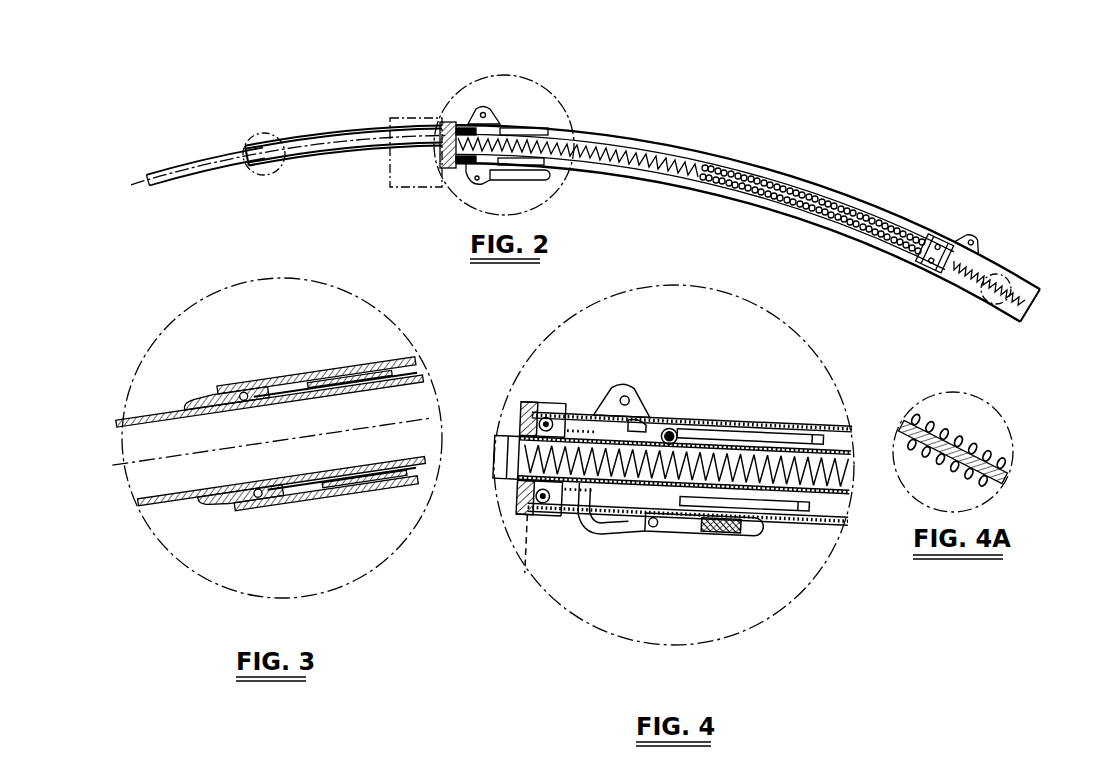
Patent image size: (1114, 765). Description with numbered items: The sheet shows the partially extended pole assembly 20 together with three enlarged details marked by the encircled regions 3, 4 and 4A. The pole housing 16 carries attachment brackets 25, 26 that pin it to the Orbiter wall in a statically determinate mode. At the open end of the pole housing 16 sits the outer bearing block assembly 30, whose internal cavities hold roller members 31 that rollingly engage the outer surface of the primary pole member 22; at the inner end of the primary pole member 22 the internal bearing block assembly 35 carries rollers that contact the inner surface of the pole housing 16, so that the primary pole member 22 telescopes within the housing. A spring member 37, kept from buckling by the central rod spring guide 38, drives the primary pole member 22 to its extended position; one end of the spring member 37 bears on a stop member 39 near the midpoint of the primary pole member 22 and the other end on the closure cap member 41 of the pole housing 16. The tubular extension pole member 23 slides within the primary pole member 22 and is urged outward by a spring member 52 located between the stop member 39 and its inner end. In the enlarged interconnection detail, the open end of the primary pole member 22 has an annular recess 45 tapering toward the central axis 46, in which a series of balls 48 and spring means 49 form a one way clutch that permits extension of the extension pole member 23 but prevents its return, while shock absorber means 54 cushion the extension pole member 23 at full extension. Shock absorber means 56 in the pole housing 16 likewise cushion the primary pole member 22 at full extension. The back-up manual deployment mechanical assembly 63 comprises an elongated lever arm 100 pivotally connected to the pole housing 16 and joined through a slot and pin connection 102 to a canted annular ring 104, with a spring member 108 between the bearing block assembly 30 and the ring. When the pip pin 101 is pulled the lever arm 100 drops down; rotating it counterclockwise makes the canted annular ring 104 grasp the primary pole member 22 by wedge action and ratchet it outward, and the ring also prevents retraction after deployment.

In FIG. 2, the detail circle for FIG. 3 is at (249, 133).
In FIG. 2, the detail circle for FIG. 4 is at (568, 186).
In FIG. 2, the detail circle for FIG. 4A is at (984, 306).
In FIG. 4, the pole housing 16 is at (733, 425).
In FIG. 2, the pole assembly 20 is at (823, 184).
In FIG. 2, the primary pole member 22 is at (312, 132).
In FIG. 3, the primary pole member 22 is at (313, 375).
In FIG. 4, the primary pole member 22 is at (628, 445).
In FIG. 2, the extension pole member 23 is at (188, 158).
In FIG. 3, the extension pole member 23 is at (157, 415).
In FIG. 2, the attachment bracket 25 is at (966, 236).
In FIG. 2, the attachment bracket 26 is at (482, 110).
In FIG. 4, the attachment bracket 26 is at (632, 393).
In FIG. 2, the outer bearing block assembly 30 is at (451, 119).
In FIG. 4, the outer bearing block assembly 30 is at (536, 413).
In FIG. 4, the roller member 31 is at (548, 421).
In FIG. 2, the internal bearing block assembly 35 is at (920, 275).
In FIG. 2, the spring member 37 is at (1019, 291).
In FIG. 4A, the spring member 37 is at (956, 421).
In FIG. 4A, the central rod spring guide 38 is at (991, 451).
In FIG. 2, the stop member 39 is at (709, 171).
In FIG. 2, the closure cap member 41 is at (1042, 297).
In FIG. 3, the annular recess 45 is at (237, 390).
In FIG. 3, the central axis 46 is at (337, 432).
In FIG. 3, the ball 48 is at (242, 392).
In FIG. 3, the spring means 49 is at (247, 504).
In FIG. 2, the spring member 52 is at (632, 149).
In FIG. 3, the shock absorber means 54 is at (368, 485).
In FIG. 4, the shock absorber means 56 is at (731, 438).
In FIG. 4, the back-up manual deployment mechanical assembly 63 is at (738, 556).
In FIG. 4, the lever arm 100 is at (661, 556).
In FIG. 4, the pip pin 101 is at (671, 541).
In FIG. 4, the slot and pin connection 102 is at (586, 526).
In FIG. 4, the canted annular ring 104 is at (628, 419).
In FIG. 4, the spring member 108 is at (569, 416).